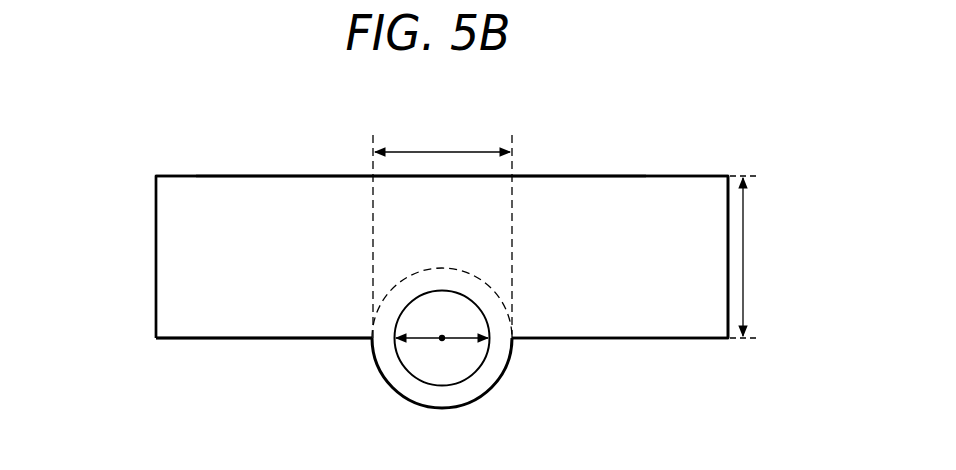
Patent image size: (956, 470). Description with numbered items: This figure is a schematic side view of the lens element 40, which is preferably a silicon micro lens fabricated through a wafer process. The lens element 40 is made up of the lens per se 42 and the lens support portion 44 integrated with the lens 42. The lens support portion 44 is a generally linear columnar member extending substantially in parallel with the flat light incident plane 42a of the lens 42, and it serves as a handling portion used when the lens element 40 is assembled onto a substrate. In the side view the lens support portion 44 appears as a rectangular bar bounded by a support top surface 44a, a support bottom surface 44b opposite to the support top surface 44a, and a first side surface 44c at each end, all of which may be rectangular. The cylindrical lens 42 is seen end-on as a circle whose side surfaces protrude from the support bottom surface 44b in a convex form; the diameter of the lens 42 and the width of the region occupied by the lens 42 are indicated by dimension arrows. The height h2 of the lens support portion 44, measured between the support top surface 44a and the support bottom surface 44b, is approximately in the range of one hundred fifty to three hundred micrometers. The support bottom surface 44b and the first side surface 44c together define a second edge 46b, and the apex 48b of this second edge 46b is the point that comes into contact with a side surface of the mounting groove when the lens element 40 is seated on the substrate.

The lens element 40 is at (798, 107).
The lens 42 is at (445, 151).
The light incident plane 42a is at (442, 340).
The lens support portion 44 is at (282, 195).
The support top surface 44a is at (196, 174).
The support bottom surface 44b is at (329, 339).
The first side surface 44c is at (296, 300).
The second edge 46b is at (200, 339).
The apex 48b is at (728, 338).
The height h2 is at (745, 257).